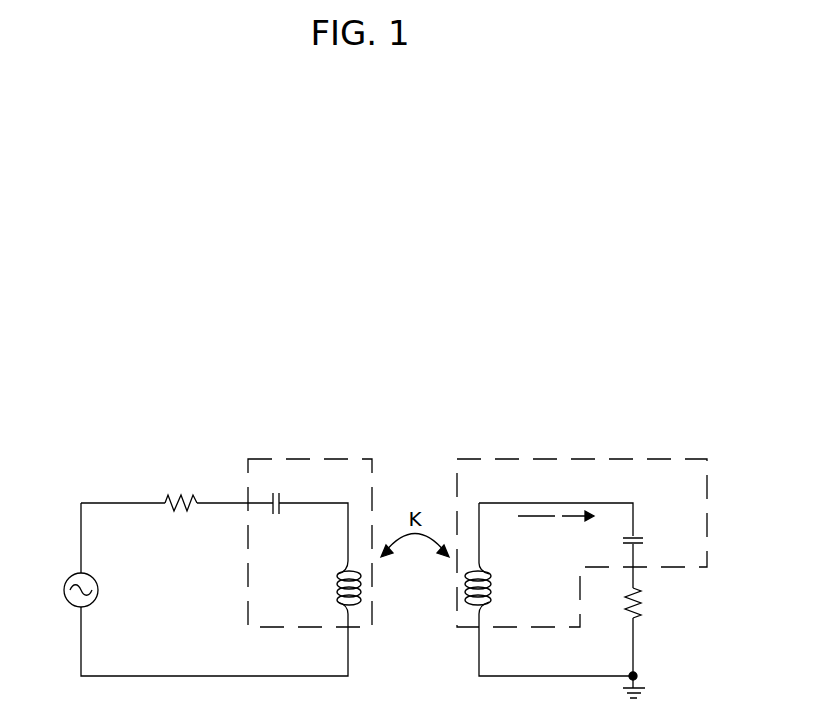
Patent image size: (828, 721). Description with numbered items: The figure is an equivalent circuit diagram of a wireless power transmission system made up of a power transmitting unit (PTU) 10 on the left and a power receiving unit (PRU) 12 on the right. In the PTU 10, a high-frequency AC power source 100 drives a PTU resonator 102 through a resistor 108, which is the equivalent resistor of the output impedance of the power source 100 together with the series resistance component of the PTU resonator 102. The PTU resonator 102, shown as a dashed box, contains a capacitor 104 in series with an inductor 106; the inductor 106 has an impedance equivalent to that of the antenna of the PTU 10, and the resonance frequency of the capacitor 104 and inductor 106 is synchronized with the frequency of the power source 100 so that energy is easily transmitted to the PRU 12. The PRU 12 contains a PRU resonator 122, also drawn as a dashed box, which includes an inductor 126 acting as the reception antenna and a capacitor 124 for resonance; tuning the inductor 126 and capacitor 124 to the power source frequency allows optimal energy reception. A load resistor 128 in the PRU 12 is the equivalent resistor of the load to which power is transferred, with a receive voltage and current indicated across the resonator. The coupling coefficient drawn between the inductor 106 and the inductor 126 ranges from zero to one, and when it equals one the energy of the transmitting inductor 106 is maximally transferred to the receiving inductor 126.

The power transmitting unit (PTU) 10 is at (232, 394).
The power receiving unit (PRU) 12 is at (547, 394).
The power source Vs 100 is at (68, 606).
The PTU resonator 102 is at (317, 458).
The capacitor Ctx 104 is at (269, 514).
The inductor Ltx 106 is at (362, 593).
The resistor Rs 108 is at (181, 511).
The PRU resonator 122 is at (583, 458).
The capacitor Crx 124 is at (642, 537).
The inductor Lrx 126 is at (461, 583).
The resistor RL 128 is at (643, 620).